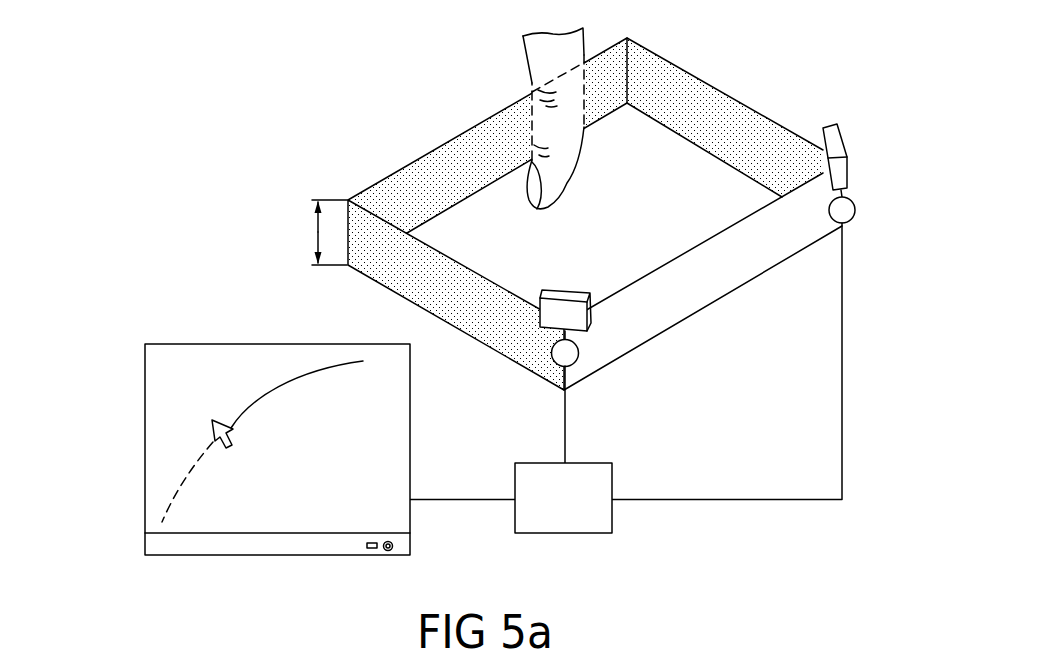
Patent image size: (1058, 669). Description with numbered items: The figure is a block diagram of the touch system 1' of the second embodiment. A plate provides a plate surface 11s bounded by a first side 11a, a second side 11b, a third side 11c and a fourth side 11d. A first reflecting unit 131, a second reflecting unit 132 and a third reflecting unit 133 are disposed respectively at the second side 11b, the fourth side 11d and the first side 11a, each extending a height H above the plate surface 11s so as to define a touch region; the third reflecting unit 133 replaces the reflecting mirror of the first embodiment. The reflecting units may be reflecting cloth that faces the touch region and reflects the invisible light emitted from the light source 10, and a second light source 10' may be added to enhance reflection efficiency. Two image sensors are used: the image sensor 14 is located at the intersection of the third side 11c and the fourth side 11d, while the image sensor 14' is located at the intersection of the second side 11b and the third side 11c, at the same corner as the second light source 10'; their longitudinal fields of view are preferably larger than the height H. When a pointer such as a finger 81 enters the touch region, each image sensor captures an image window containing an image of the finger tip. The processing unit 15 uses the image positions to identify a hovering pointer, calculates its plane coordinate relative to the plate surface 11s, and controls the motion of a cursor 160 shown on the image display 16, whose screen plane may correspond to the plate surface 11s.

The touch system 1' is at (486, 277).
The finger 81 is at (528, 62).
The first side 11a is at (440, 210).
The second side 11b is at (746, 172).
The third side 11c is at (697, 318).
The fourth side 11d is at (424, 307).
The plate surface 11s is at (627, 148).
The first reflecting unit 131 is at (737, 135).
The second reflecting unit 132 is at (518, 342).
The third reflecting unit 133 is at (472, 165).
The image sensor 14 is at (626, 342).
The image sensor 14' is at (870, 160).
The light source 10 is at (608, 390).
The second light source 10' is at (878, 216).
The processing unit 15 is at (612, 508).
The image display 16 is at (145, 438).
The cursor 160 is at (212, 426).